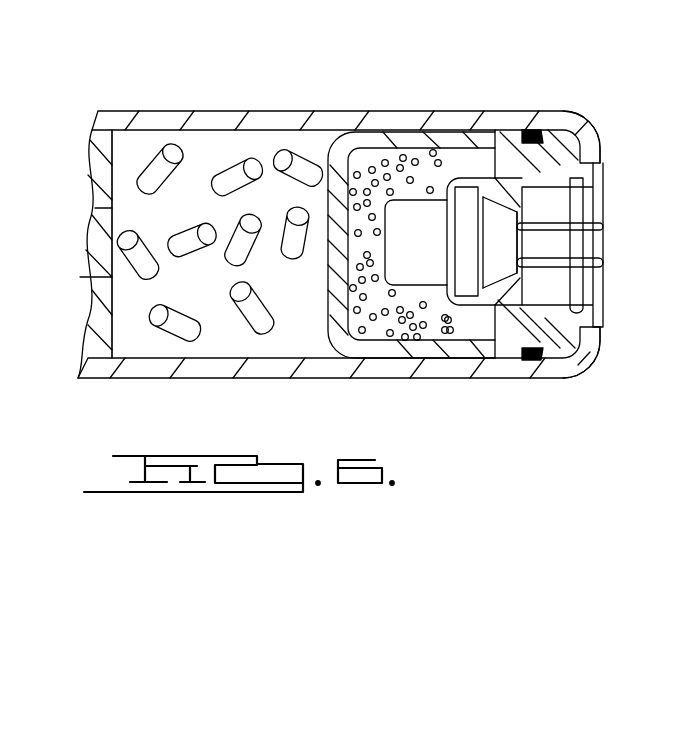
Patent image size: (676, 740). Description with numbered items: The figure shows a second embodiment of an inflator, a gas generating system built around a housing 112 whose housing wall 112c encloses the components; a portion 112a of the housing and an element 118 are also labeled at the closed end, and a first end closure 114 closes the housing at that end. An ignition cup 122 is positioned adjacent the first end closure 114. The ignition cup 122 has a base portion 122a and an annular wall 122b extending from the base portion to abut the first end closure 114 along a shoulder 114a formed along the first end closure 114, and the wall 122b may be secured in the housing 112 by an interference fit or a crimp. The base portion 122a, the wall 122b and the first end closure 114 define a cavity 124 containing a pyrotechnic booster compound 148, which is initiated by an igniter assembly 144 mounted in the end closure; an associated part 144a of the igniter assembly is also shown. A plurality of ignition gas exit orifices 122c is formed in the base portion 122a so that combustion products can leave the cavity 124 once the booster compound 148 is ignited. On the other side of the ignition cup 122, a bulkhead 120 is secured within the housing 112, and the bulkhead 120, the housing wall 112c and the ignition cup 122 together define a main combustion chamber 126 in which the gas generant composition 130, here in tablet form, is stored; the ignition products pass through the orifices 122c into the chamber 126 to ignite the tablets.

The housing 112 is at (362, 232).
The housing end lip 112a is at (592, 118).
The housing wall 112c is at (133, 116).
The first end closure 114 is at (544, 207).
The shoulder 114a is at (549, 185).
The housing end edge 118 is at (554, 372).
The bulkhead 120 is at (102, 162).
The ignition cup 122 is at (386, 254).
The base portion 122a is at (362, 142).
The annular wall 122b is at (430, 353).
The ignition gas exit orifice 122c is at (330, 298).
The cavity 124 is at (468, 163).
The main combustion chamber 126 is at (223, 328).
The gas generant composition 130 is at (283, 147).
The igniter assembly 144 is at (575, 283).
The plunger seal 144a is at (490, 282).
The pyrotechnic booster compound 148 is at (422, 301).